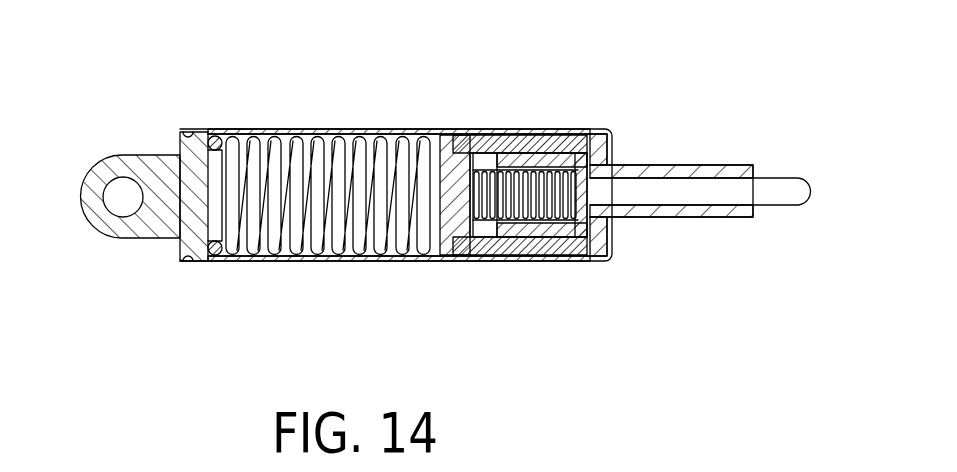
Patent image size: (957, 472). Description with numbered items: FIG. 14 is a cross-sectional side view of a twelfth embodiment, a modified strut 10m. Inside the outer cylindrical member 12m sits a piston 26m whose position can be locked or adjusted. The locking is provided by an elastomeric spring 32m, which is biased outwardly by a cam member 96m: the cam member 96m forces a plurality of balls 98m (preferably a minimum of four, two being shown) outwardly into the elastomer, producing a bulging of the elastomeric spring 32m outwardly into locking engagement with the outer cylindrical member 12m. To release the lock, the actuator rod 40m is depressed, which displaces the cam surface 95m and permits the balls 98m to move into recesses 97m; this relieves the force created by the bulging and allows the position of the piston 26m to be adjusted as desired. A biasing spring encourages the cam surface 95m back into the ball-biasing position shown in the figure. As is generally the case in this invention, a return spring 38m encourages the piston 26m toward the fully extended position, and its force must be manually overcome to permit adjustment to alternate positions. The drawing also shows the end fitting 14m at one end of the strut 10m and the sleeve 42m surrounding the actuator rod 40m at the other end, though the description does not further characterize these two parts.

The strut 10m is at (497, 183).
The outer cylindrical member 12m is at (272, 128).
The mounting eye 14m is at (157, 238).
The return spring 38m is at (333, 128).
The piston 26m is at (442, 268).
The balls 98m is at (533, 128).
The elastomeric spring 32m is at (558, 128).
The cam surface 95m is at (555, 256).
The cam member 96m is at (491, 278).
The recesses 97m is at (612, 252).
The rod guide sleeve 42m is at (661, 165).
The actuator rod 40m is at (783, 178).